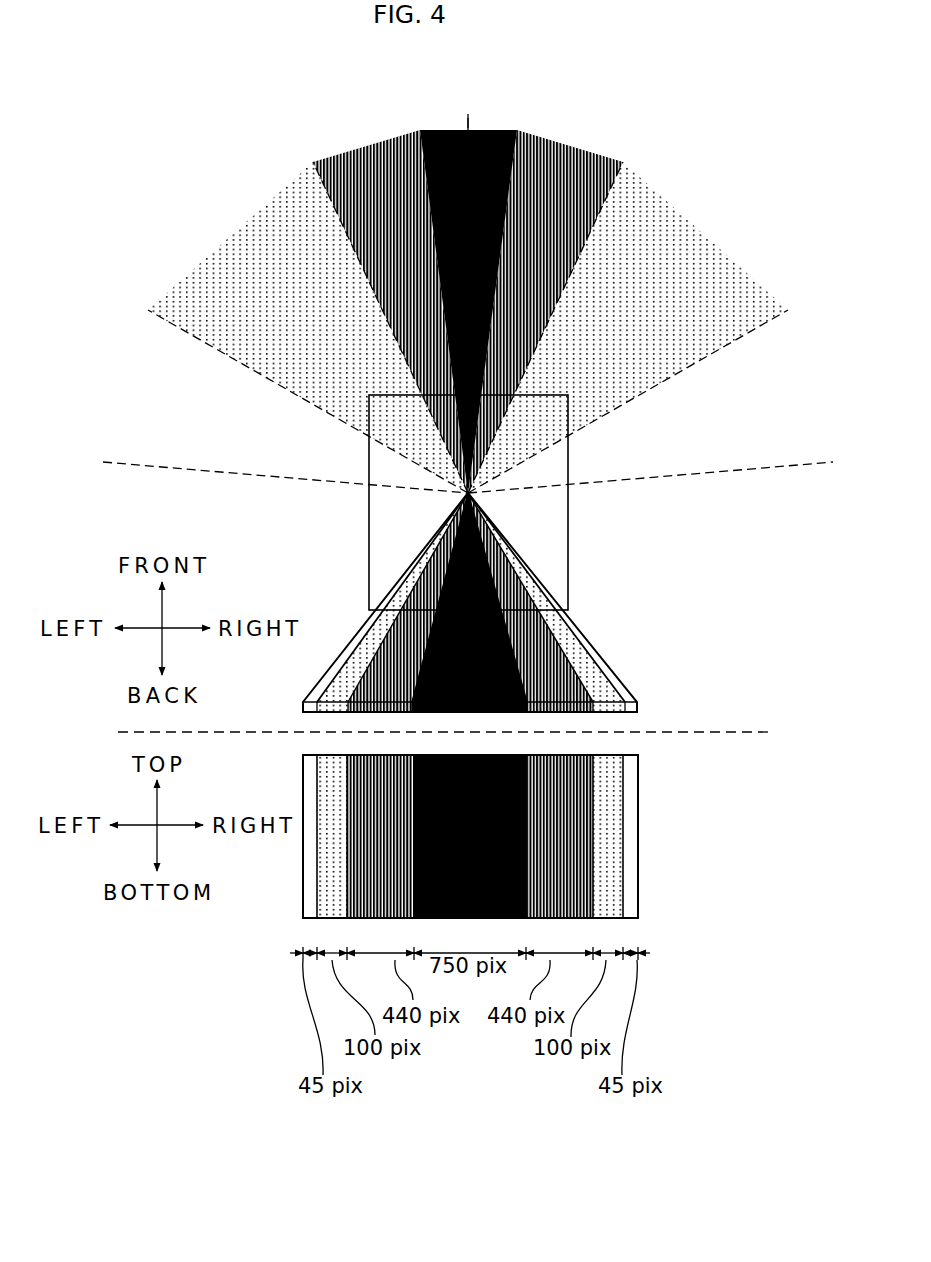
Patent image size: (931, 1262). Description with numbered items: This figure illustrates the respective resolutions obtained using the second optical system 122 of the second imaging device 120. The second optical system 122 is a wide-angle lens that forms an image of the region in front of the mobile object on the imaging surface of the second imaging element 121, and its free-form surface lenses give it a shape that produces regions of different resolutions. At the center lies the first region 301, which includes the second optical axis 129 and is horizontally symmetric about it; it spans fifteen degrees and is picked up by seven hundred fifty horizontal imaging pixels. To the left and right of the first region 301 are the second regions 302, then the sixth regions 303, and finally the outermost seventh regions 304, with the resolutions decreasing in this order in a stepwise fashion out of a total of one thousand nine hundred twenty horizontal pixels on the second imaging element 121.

The second imaging device 120 is at (545, 656).
The second imaging element 121 is at (638, 710).
The second optical system 122 is at (568, 548).
The second optical axis 129 is at (470, 123).
The first region 301 is at (487, 187).
The second regions 302 is at (395, 208).
The sixth regions 303 is at (285, 278).
The seventh regions 304 is at (203, 420).